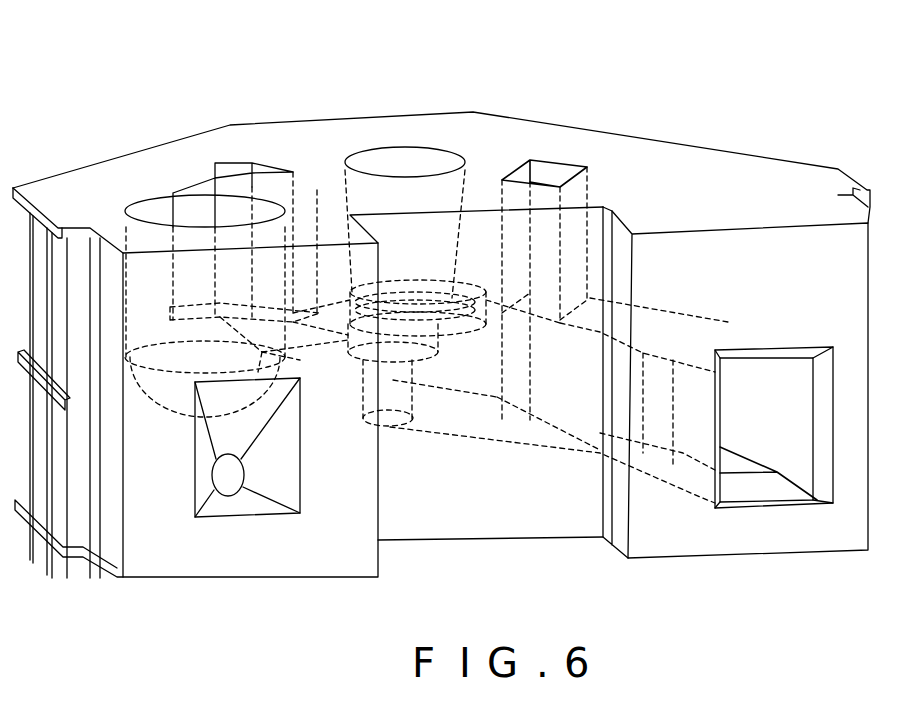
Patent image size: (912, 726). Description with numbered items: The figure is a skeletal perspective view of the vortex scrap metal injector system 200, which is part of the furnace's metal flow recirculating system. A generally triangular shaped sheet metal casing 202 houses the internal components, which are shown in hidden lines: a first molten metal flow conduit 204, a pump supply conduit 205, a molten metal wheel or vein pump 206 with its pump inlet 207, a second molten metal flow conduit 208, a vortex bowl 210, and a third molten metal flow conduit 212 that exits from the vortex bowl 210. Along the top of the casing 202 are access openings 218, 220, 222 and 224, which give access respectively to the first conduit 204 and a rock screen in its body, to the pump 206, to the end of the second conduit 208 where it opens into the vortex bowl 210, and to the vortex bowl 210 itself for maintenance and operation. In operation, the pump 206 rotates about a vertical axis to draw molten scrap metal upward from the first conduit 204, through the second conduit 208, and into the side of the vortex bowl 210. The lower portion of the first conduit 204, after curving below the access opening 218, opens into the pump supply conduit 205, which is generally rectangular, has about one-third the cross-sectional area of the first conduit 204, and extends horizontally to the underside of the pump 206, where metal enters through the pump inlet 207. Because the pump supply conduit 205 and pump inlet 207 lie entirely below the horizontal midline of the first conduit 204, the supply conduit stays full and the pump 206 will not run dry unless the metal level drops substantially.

The vortex scrap metal injector system 200 is at (706, 71).
The sheet metal casing 202 is at (773, 187).
The first molten metal flow conduit 204 is at (688, 455).
The pump supply conduit 205 is at (453, 430).
The molten metal wheel or vein pump 206 is at (460, 313).
The pump inlet 207 is at (437, 356).
The second molten metal flow conduit 208 is at (317, 348).
The vortex bowl 210 is at (172, 395).
The third molten metal flow conduit 212 is at (195, 433).
The access opening 218 is at (550, 163).
The access opening 220 is at (415, 147).
The access opening 222 is at (238, 163).
The access opening 224 is at (140, 197).